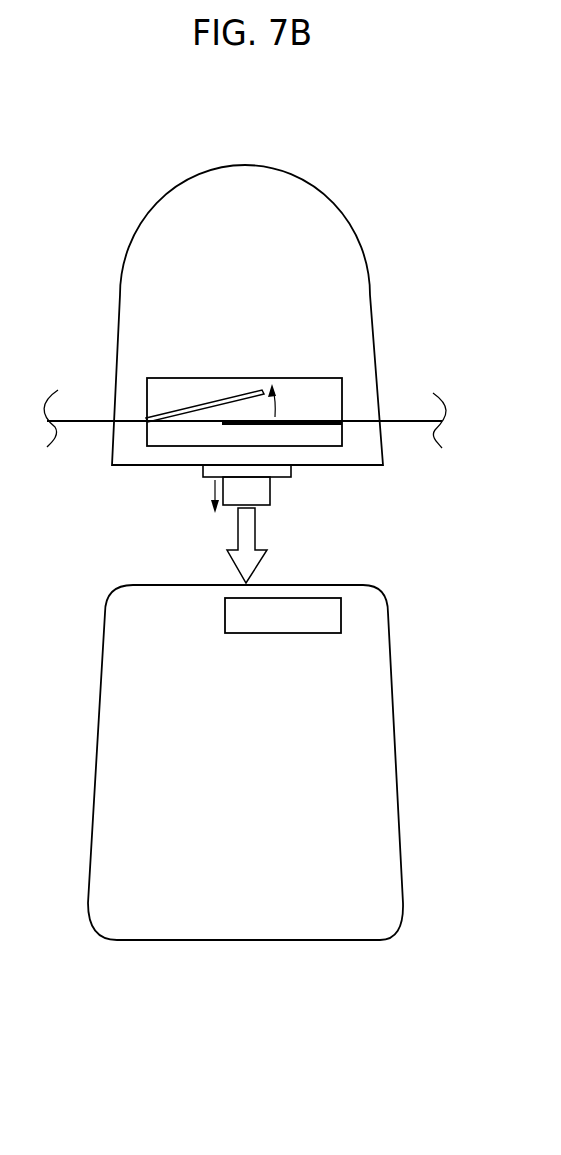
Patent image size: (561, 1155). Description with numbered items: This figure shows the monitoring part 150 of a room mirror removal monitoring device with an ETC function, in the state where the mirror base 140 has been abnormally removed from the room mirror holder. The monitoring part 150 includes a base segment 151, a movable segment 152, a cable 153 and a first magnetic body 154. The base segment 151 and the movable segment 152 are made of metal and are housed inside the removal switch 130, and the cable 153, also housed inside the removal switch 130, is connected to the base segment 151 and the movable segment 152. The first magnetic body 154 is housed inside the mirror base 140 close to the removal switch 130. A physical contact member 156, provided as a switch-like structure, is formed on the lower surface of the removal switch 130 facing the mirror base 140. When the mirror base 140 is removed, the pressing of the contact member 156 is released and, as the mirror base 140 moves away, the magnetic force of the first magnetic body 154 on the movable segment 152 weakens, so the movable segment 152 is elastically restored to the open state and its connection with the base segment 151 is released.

The removal switch 130 is at (312, 180).
The mirror base 140 is at (245, 940).
The monitoring part 150 is at (248, 751).
The base segment 151 is at (290, 420).
The movable segment 152 is at (203, 400).
The cable 153 is at (405, 421).
The first magnetic body 154 is at (280, 633).
The contact member 156 is at (250, 485).